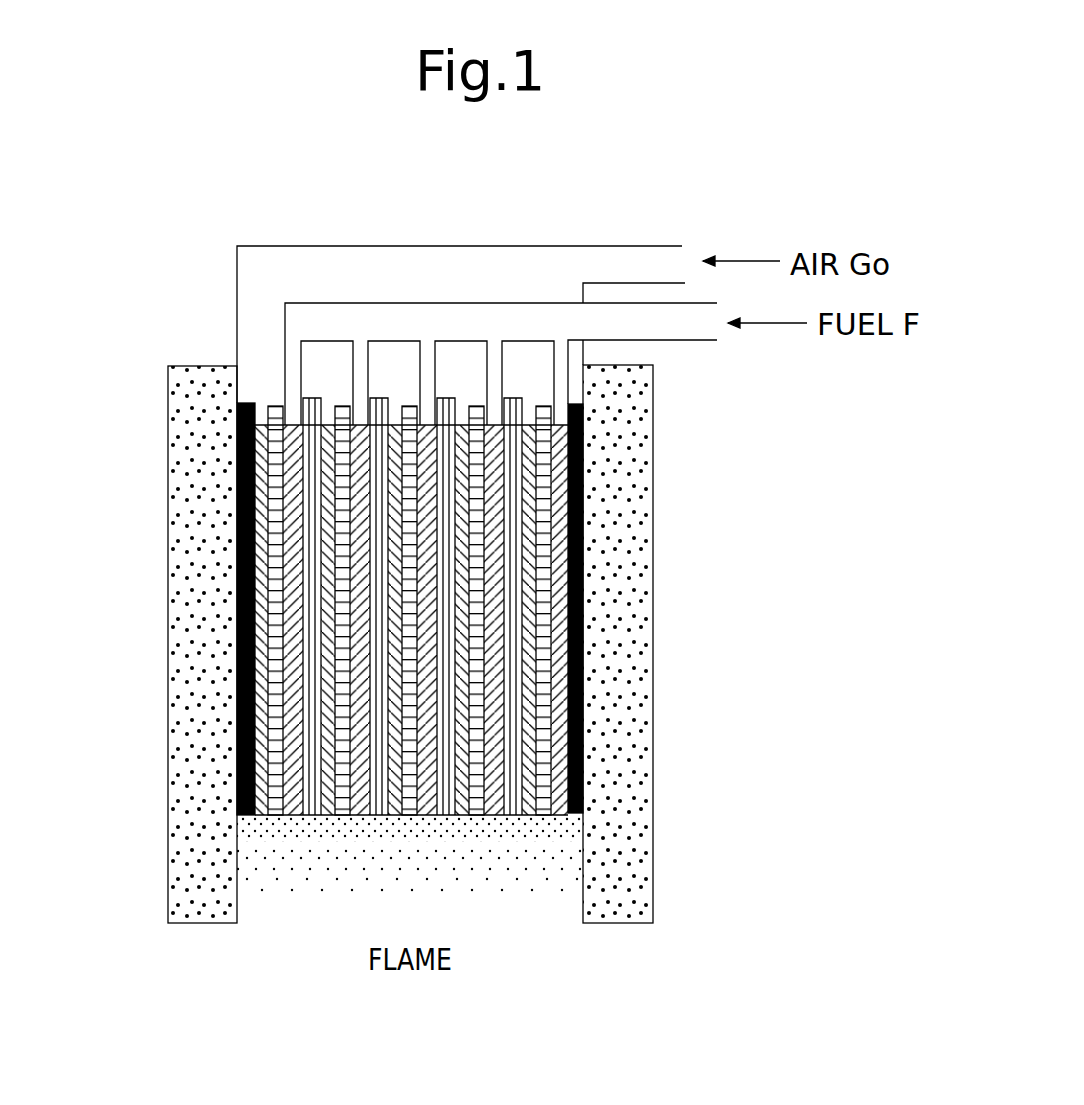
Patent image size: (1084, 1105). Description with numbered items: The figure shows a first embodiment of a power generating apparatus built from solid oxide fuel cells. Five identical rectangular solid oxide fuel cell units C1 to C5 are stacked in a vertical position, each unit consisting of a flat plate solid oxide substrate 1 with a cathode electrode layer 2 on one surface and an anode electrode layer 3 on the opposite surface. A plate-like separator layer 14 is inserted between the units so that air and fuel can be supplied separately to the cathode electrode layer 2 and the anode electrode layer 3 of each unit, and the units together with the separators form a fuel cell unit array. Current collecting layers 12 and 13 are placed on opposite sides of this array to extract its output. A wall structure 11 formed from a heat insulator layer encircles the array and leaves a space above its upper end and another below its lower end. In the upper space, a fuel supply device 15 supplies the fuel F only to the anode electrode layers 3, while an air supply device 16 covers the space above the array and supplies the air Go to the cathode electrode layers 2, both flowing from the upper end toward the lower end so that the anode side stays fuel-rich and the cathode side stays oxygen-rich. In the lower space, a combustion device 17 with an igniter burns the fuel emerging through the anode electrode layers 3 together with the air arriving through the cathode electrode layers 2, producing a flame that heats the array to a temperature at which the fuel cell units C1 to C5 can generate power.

The flat plate solid oxide substrate 1 is at (275, 510).
The cathode electrode layer 2 is at (262, 481).
The anode electrode layer 3 is at (280, 537).
The wall structure 11 is at (640, 828).
The current collecting layer 12 is at (238, 715).
The current collecting layer 13 is at (587, 687).
The separator layer 14 is at (312, 815).
The fuel supply device 15 is at (528, 327).
The air supply device 16 is at (393, 262).
The combustion device 17 is at (537, 919).
The solid oxide fuel cell unit C1 is at (387, 610).
The solid oxide fuel cell unit C5 is at (735, 430).